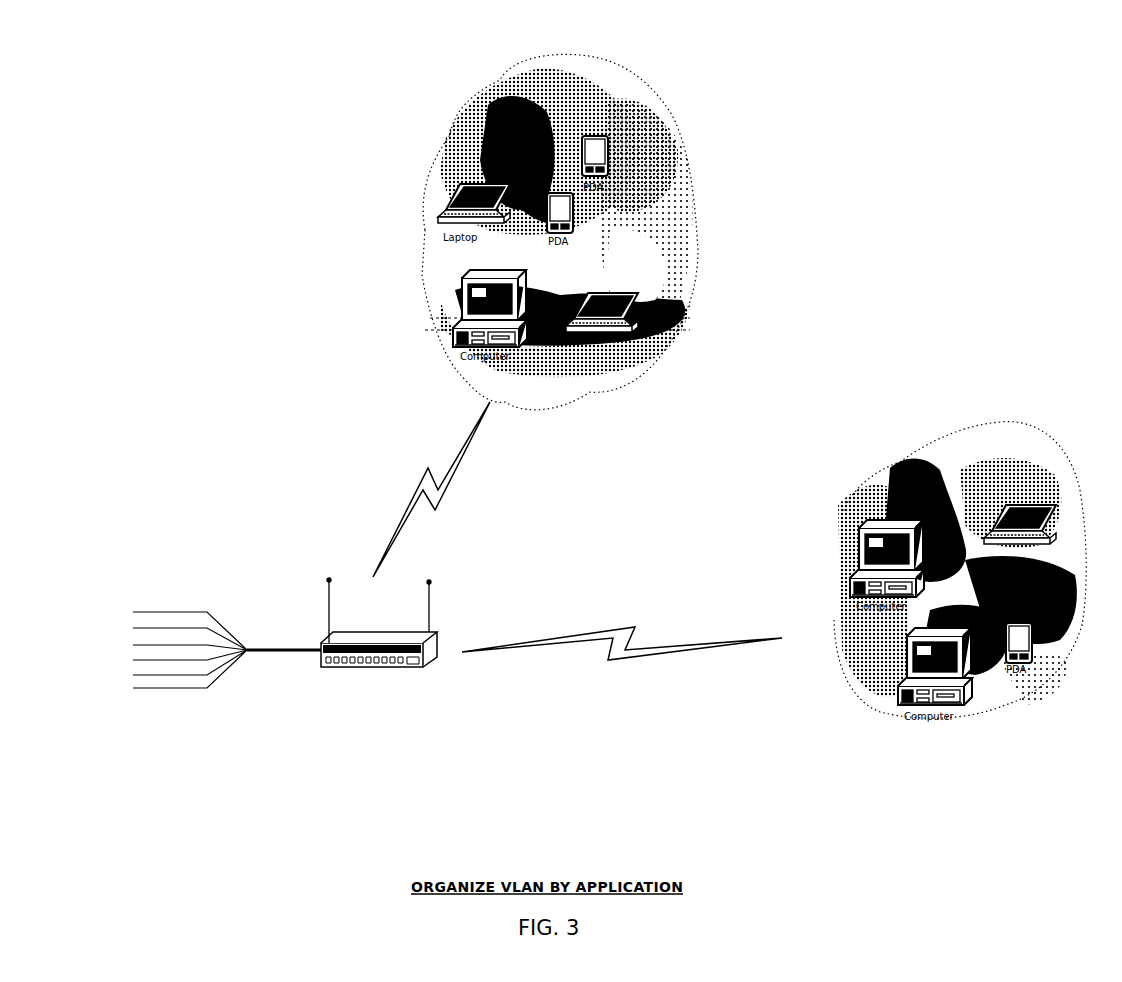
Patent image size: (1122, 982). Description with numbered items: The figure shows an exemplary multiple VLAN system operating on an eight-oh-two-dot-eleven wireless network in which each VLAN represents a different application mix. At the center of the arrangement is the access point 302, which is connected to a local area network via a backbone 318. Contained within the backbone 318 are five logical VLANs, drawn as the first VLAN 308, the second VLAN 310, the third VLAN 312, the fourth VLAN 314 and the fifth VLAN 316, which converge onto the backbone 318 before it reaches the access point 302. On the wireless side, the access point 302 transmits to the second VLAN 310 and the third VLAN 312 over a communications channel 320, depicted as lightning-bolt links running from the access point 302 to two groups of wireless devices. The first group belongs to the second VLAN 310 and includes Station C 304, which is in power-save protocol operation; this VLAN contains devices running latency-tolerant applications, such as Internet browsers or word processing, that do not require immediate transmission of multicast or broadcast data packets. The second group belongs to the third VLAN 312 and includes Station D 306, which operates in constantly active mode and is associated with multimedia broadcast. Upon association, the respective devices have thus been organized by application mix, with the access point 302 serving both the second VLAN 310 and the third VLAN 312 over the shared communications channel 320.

The access point 302 is at (388, 632).
The Station C 304 is at (638, 300).
The Station D 306 is at (1056, 516).
The VLAN 1 308 is at (134, 621).
The VLAN 2 310 is at (686, 129).
The VLAN 3 312 is at (1016, 396).
The VLAN 4 314 is at (134, 666).
The VLAN 5 316 is at (134, 681).
The backbone 318 is at (273, 650).
The communications channel 320 is at (423, 483).